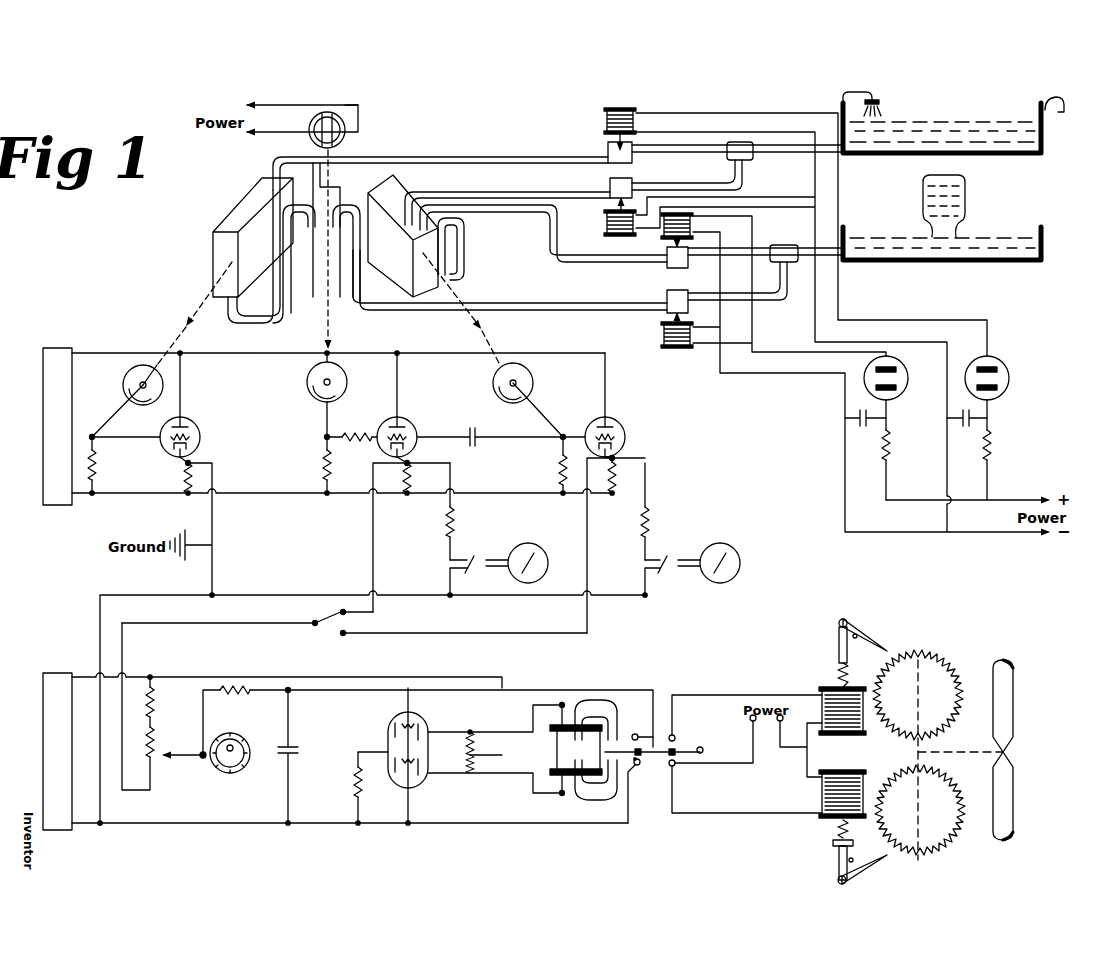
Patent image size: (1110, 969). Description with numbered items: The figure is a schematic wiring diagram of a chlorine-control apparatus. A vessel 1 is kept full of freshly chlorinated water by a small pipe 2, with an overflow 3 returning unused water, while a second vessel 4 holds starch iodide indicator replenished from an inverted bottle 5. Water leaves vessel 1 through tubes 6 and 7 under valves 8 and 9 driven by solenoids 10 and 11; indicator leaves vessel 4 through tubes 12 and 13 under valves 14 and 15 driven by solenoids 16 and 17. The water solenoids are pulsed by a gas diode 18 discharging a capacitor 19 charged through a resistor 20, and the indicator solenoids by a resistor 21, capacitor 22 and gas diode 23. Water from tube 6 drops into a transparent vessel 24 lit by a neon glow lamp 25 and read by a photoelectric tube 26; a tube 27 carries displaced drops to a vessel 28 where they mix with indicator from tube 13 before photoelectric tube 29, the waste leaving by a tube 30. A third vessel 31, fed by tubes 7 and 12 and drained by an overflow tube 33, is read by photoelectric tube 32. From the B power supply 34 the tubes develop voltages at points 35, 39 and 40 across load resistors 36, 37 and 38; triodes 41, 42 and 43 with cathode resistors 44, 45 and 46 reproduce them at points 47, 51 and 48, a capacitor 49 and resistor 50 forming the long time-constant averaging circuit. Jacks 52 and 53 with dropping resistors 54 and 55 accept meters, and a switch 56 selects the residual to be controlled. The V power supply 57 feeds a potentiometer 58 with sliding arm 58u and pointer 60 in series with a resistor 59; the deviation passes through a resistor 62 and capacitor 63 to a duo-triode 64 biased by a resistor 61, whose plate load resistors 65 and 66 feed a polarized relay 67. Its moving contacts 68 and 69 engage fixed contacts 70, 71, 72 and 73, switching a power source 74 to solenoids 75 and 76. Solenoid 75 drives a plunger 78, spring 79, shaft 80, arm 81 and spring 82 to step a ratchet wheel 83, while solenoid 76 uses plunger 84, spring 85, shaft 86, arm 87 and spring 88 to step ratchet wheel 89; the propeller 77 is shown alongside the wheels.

The vessel 1 is at (984, 125).
The small pipe 2 is at (831, 95).
The overflow 3 is at (1058, 99).
The vessel 4 is at (994, 265).
The inverted bottle 5 is at (953, 178).
The tube 6 is at (366, 157).
The tube 7 is at (472, 192).
The valve 8 is at (604, 147).
The valve 9 is at (606, 185).
The solenoid 10 is at (604, 116).
The solenoid 11 is at (604, 224).
The tube 12 is at (497, 213).
The tube 13 is at (352, 208).
The valve 14 is at (690, 266).
The valve 15 is at (663, 295).
The solenoid 16 is at (663, 236).
The solenoid 17 is at (663, 335).
The gas diode 18 is at (1003, 368).
The capacitor 19 is at (966, 427).
The resistor 20 is at (993, 462).
The resistor 21 is at (882, 465).
The capacitor 22 is at (868, 427).
The gas diode 23 is at (912, 362).
The vessel 24 is at (217, 253).
The neon glow lamp 25 is at (358, 110).
The photoelectric tube 26 is at (124, 375).
The tube 27 is at (278, 314).
The vessel 28 is at (316, 296).
The photoelectric tube 29 is at (311, 373).
The tube 30 is at (348, 290).
The vessel 31 is at (397, 187).
The photoelectric tube 32 is at (531, 371).
The overflow tube 33 is at (458, 255).
The B power supply 34 is at (58, 352).
The point 35 is at (92, 423).
The series load resistor 36 is at (97, 478).
The load resistor 37 is at (322, 466).
The load resistor 38 is at (560, 465).
The point 39 is at (325, 437).
The point 40 is at (563, 430).
The triode 41 is at (197, 414).
The triode 42 is at (410, 415).
The triode 43 is at (623, 416).
The cathode resistor 44 is at (184, 484).
The cathode resistor 45 is at (413, 478).
The cathode resistor 46 is at (620, 494).
The point 47 is at (180, 463).
The point 48 is at (616, 458).
The capacitor 49 is at (478, 430).
The resistor 50 is at (347, 432).
The point 51 is at (410, 462).
The jack 52 is at (466, 572).
The jack 53 is at (661, 570).
The dropping resistor 54 is at (454, 520).
The dropping resistor 55 is at (648, 518).
The double-pole single-throw switch 56 is at (325, 636).
The V power supply 57 is at (60, 672).
The potentiometer 58 is at (154, 742).
The sliding arm 58u is at (158, 762).
The resistor 59 is at (153, 693).
The pointer 60 is at (233, 772).
The resistor 61 is at (353, 793).
The resistor 62 is at (238, 697).
The capacitor 63 is at (296, 745).
The duo-triode 64 is at (392, 718).
The plate load resistor 65 is at (463, 735).
The plate load resistor 66 is at (468, 778).
The polarized relay 67 is at (596, 703).
The moving contact 68 is at (633, 768).
The moving contact 69 is at (683, 766).
The lower fixed contact 70 is at (640, 766).
The lower fixed contact 71 is at (673, 767).
The upper fixed contact 72 is at (637, 733).
The upper fixed contact 73 is at (670, 734).
The power source 74 is at (750, 720).
The solenoid 75 is at (822, 703).
The solenoid 76 is at (822, 790).
The propeller 77 is at (1010, 748).
The plunger 78 is at (840, 645).
The spring 79 is at (840, 672).
The shaft 80 is at (841, 620).
The arm 81 is at (849, 622).
The spring 82 is at (852, 655).
The ratchet wheel 83 is at (923, 655).
The plunger 84 is at (833, 843).
The spring 85 is at (835, 827).
The shaft 86 is at (838, 860).
The arm 87 is at (860, 876).
The spring 88 is at (854, 857).
The ratchet wheel 89 is at (930, 845).